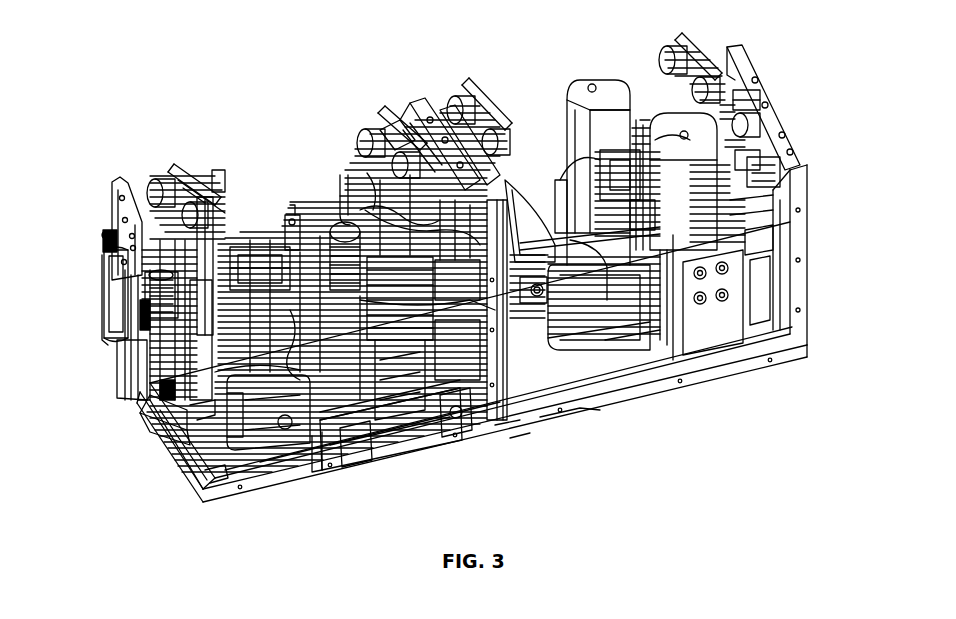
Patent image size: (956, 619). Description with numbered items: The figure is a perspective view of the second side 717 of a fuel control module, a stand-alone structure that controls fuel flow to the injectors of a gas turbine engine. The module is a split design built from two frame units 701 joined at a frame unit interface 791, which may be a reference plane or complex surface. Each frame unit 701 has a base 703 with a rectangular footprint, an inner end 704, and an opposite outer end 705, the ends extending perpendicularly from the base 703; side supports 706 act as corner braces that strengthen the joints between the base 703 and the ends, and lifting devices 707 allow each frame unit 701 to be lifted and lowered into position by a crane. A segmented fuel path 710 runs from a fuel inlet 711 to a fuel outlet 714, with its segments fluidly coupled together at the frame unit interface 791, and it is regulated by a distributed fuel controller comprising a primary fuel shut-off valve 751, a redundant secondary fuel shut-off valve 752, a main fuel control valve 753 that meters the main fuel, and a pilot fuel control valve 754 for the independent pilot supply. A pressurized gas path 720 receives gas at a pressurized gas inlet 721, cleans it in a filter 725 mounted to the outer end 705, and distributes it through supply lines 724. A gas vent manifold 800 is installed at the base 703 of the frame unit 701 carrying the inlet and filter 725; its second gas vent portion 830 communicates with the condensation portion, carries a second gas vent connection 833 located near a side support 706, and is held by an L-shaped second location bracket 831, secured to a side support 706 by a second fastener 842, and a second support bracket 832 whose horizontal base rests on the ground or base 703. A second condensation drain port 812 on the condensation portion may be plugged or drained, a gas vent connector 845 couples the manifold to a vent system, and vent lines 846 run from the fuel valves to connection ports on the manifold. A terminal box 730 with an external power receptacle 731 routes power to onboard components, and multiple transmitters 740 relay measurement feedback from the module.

The frame unit 701 is at (122, 369).
The base 703 is at (240, 500).
The inner end 704 is at (407, 113).
The outer end 705 is at (197, 477).
The side support 706 is at (203, 502).
The lifting device 707 is at (122, 193).
The segmented fuel path 710 is at (290, 460).
The fuel inlet 711 is at (197, 427).
The fuel outlet 714 is at (748, 128).
The second side 717 is at (613, 417).
The pressurized gas path 720 is at (143, 272).
The pressurized gas inlet 721 is at (106, 231).
The supply line 724 is at (260, 253).
The filter 725 is at (110, 333).
The terminal box 730 is at (217, 230).
The power receptacle 731 is at (152, 417).
The transmitter 740 is at (183, 187).
The primary fuel shut-off valve 751 is at (197, 413).
The secondary fuel shut-off valve 752 is at (340, 230).
The main fuel control valve 753 is at (663, 123).
The pilot fuel control valve 754 is at (583, 87).
The frame unit interface 791 is at (515, 442).
The gas vent manifold 800 is at (383, 423).
The second condensation drain port 812 is at (287, 223).
The second gas vent portion 830 is at (372, 455).
The second location bracket 831 is at (450, 452).
The second support bracket 832 is at (352, 447).
The second gas vent connection 833 is at (320, 462).
The second fastener 842 is at (413, 420).
The gas vent connector 845 is at (217, 480).
The vent line 846 is at (367, 173).